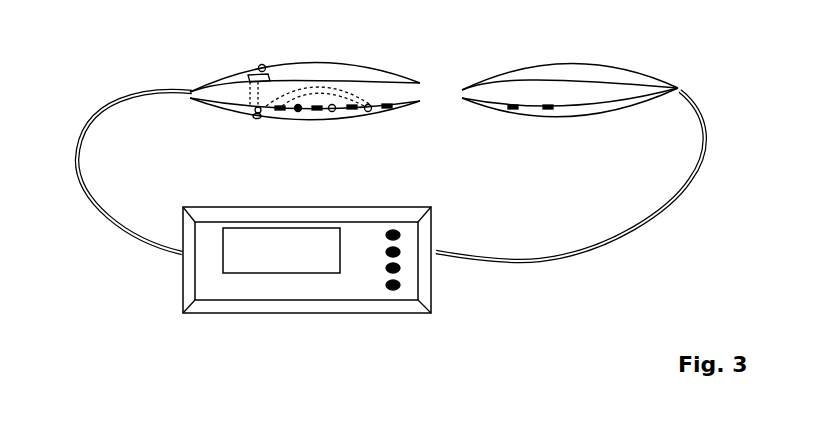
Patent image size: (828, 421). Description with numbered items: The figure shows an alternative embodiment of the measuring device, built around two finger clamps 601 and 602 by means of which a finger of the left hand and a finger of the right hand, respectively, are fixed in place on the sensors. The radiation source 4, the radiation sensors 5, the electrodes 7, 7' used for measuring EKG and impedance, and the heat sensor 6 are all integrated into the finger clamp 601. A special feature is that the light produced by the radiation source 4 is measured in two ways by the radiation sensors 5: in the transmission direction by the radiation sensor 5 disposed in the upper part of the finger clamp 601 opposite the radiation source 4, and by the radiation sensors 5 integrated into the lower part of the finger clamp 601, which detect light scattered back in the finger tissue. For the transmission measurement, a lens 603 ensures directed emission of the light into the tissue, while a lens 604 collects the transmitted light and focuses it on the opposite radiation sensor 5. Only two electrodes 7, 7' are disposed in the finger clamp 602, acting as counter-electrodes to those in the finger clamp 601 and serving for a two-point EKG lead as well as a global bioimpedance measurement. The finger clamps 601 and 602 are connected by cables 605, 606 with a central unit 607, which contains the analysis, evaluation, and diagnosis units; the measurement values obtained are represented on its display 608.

The finger clamp 601 is at (213, 78).
The finger clamp 602 is at (593, 70).
The lens 603 is at (255, 112).
The lens 604 is at (250, 75).
The cable 605 is at (83, 187).
The cable 606 is at (637, 223).
The central unit 607 is at (360, 290).
The display 608 is at (278, 258).
The radiation source 4 is at (257, 116).
The radiation sensors 5 is at (266, 66).
The heat sensor 6 is at (297, 111).
The electrode 7 is at (342, 136).
The electrode 7' is at (482, 128).